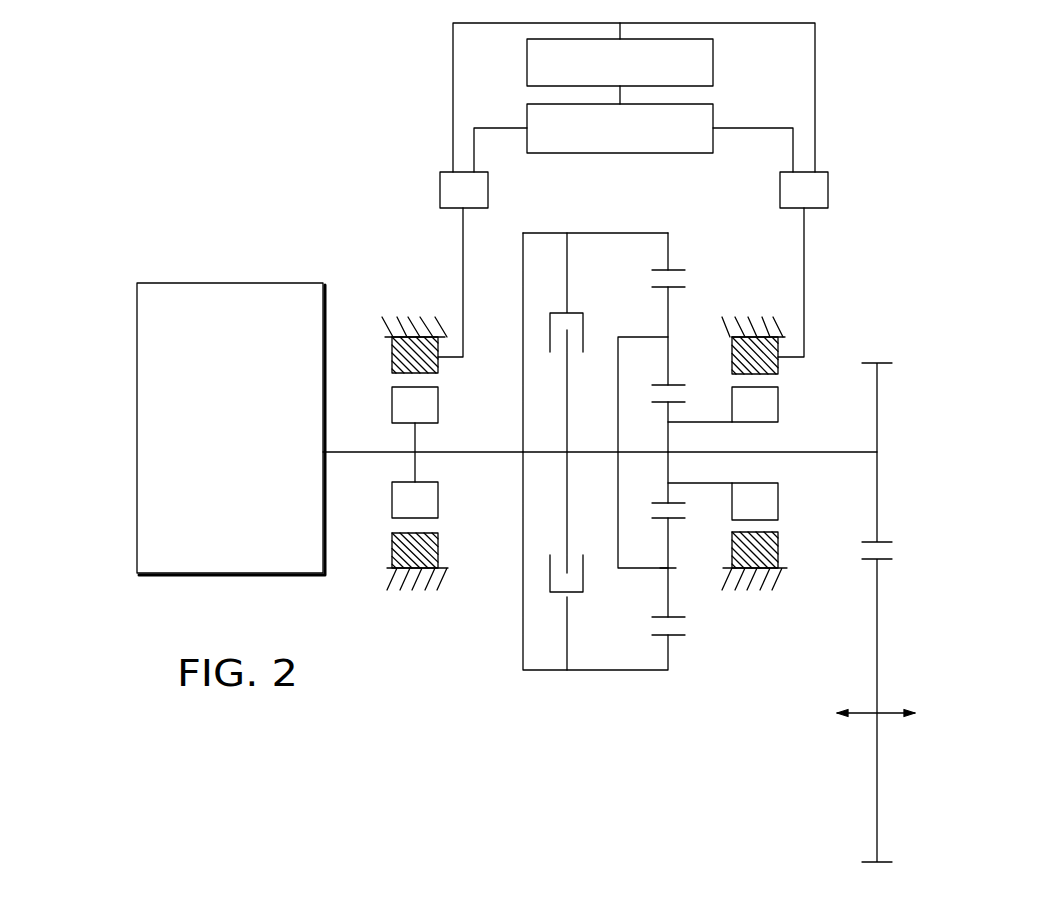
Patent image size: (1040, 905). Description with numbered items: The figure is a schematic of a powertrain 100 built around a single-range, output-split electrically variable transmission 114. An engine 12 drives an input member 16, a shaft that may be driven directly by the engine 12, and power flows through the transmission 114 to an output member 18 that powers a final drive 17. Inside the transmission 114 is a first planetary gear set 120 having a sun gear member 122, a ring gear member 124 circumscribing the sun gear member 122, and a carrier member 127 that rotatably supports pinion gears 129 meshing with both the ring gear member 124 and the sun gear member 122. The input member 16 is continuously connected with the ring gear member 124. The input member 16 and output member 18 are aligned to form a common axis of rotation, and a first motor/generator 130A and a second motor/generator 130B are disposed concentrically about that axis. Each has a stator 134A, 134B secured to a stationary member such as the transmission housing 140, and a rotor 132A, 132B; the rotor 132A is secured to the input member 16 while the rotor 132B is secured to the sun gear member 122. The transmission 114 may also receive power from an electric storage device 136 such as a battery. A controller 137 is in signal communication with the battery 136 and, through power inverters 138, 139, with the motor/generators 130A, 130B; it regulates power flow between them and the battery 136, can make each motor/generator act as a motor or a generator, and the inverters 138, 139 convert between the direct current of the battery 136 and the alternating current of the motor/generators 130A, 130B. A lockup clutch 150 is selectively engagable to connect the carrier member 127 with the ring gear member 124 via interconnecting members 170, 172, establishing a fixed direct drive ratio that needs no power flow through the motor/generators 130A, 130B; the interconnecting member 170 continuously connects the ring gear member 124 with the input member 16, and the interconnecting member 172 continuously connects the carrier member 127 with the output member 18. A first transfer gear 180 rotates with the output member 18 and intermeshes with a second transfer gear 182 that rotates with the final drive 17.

The powertrain 100 is at (928, 238).
The engine 12 is at (137, 397).
The input member 16 is at (353, 457).
The final drive 17 is at (890, 717).
The output member 18 is at (830, 453).
The electrically variable transmission 114 is at (633, 205).
The first planetary gear set 120 is at (683, 240).
The sun gear member 122 is at (655, 502).
The ring gear member 124 is at (677, 265).
The carrier member 127 is at (638, 568).
The pinion gears 129 is at (667, 593).
The first motor/generator 130A is at (426, 447).
The second motor/generator 130B is at (765, 437).
The rotor 132A is at (390, 408).
The rotor 132B is at (730, 407).
The stator 134A is at (390, 355).
The stator 134B is at (730, 350).
The electric storage device 136 is at (737, 53).
The controller 137 is at (716, 113).
The power inverter 138 is at (440, 190).
The power inverter 139 is at (830, 188).
The transmission housing 140 is at (412, 322).
The lockup clutch 150 is at (577, 605).
The interconnecting member 170 is at (590, 233).
The interconnecting member 172 is at (618, 420).
The first transfer gear 180 is at (880, 425).
The second transfer gear 182 is at (877, 630).